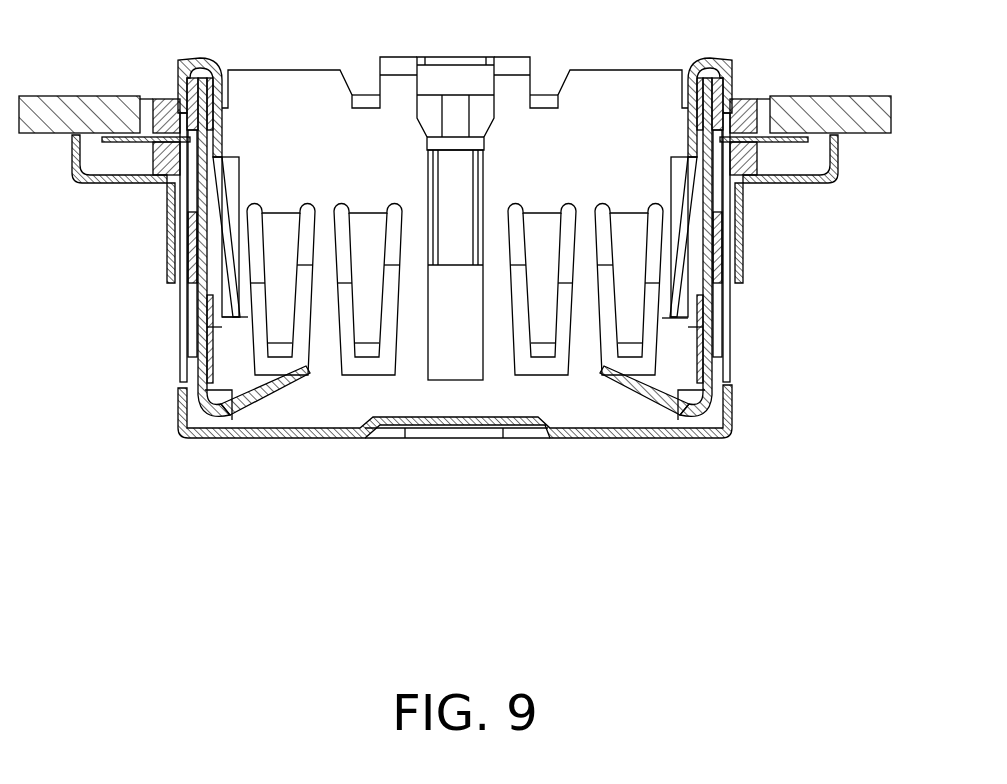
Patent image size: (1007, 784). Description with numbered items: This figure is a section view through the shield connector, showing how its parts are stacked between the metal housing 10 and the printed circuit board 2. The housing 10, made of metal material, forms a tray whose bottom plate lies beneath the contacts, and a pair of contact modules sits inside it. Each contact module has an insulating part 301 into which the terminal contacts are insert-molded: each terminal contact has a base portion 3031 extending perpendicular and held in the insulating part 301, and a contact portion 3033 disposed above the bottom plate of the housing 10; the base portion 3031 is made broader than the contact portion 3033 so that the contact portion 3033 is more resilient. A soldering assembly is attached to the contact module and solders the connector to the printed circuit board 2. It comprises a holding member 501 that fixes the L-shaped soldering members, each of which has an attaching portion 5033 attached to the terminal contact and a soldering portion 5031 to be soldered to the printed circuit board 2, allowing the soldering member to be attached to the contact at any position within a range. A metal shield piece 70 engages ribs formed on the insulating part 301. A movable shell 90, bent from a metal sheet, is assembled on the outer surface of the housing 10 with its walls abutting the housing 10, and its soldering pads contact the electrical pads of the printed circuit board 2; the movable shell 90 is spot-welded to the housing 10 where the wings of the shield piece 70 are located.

The printed circuit board 2 is at (840, 97).
The housing 10 is at (180, 410).
The shield piece 70 is at (205, 57).
The movable shell 90 is at (837, 157).
The insulating part 301 is at (222, 88).
The base portion 3031 is at (713, 258).
The contact portion 3033 is at (628, 393).
The holding member 501 is at (740, 100).
The soldering portion 5031 is at (777, 142).
The attaching portion 5033 is at (723, 200).